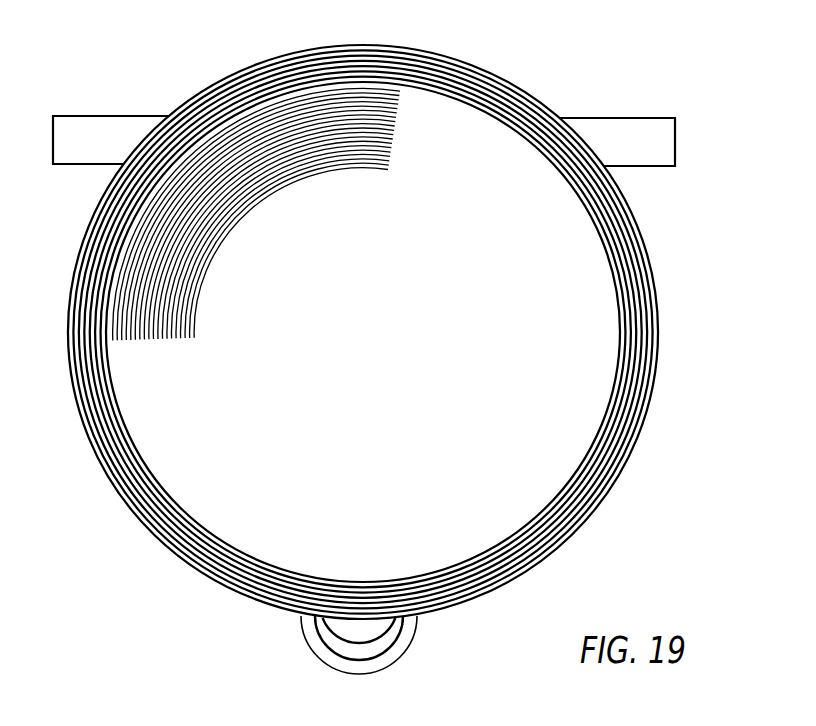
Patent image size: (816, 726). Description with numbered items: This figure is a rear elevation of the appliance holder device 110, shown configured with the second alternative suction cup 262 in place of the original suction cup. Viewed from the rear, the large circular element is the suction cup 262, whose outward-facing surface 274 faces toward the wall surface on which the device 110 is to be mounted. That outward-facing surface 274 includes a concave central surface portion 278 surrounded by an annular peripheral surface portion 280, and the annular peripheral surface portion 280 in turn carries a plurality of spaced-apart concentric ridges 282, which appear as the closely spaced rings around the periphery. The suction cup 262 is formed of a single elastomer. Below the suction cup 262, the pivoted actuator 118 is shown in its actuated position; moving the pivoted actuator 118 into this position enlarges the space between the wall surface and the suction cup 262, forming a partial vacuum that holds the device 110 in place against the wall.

The device 110 is at (84, 77).
The pivoted actuator 118 is at (307, 648).
The second alternative suction cup 262 is at (643, 420).
The outward-facing surface 274 is at (518, 366).
The concave central surface portion 278 is at (476, 478).
The annular peripheral surface portion 280 is at (634, 247).
The spaced-apart concentric ridges 282 is at (632, 308).